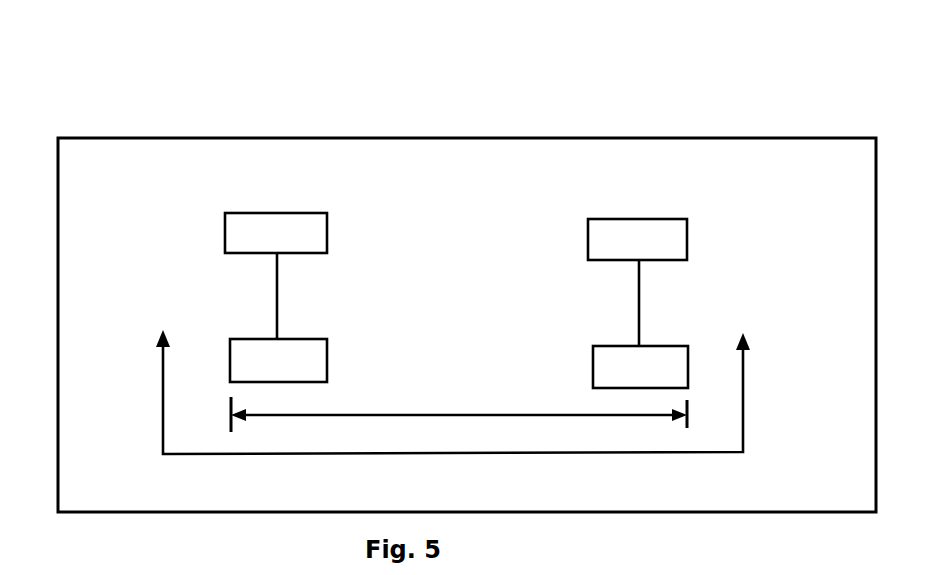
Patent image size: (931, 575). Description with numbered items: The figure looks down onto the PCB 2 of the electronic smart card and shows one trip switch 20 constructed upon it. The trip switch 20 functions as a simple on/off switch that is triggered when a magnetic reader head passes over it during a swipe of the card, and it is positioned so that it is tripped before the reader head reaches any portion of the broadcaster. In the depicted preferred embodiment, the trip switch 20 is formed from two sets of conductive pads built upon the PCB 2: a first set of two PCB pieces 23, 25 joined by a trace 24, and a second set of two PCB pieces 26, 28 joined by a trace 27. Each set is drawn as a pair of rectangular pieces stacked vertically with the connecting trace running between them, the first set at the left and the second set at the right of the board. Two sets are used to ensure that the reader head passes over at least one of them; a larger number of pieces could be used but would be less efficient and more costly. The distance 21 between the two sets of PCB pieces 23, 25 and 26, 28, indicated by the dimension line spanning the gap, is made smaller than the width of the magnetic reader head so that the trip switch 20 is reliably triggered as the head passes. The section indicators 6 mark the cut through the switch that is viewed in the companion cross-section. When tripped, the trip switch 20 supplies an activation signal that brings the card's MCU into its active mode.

The PCB 2 is at (352, 182).
The trip switch 20 is at (467, 162).
The distance 21 is at (395, 408).
The PCB piece 23 is at (247, 232).
The trace 24 is at (272, 305).
The PCB piece 25 is at (245, 355).
The PCB piece 26 is at (662, 228).
The trace 27 is at (645, 310).
The PCB piece 28 is at (672, 359).
The section line 6- 6 is at (446, 409).